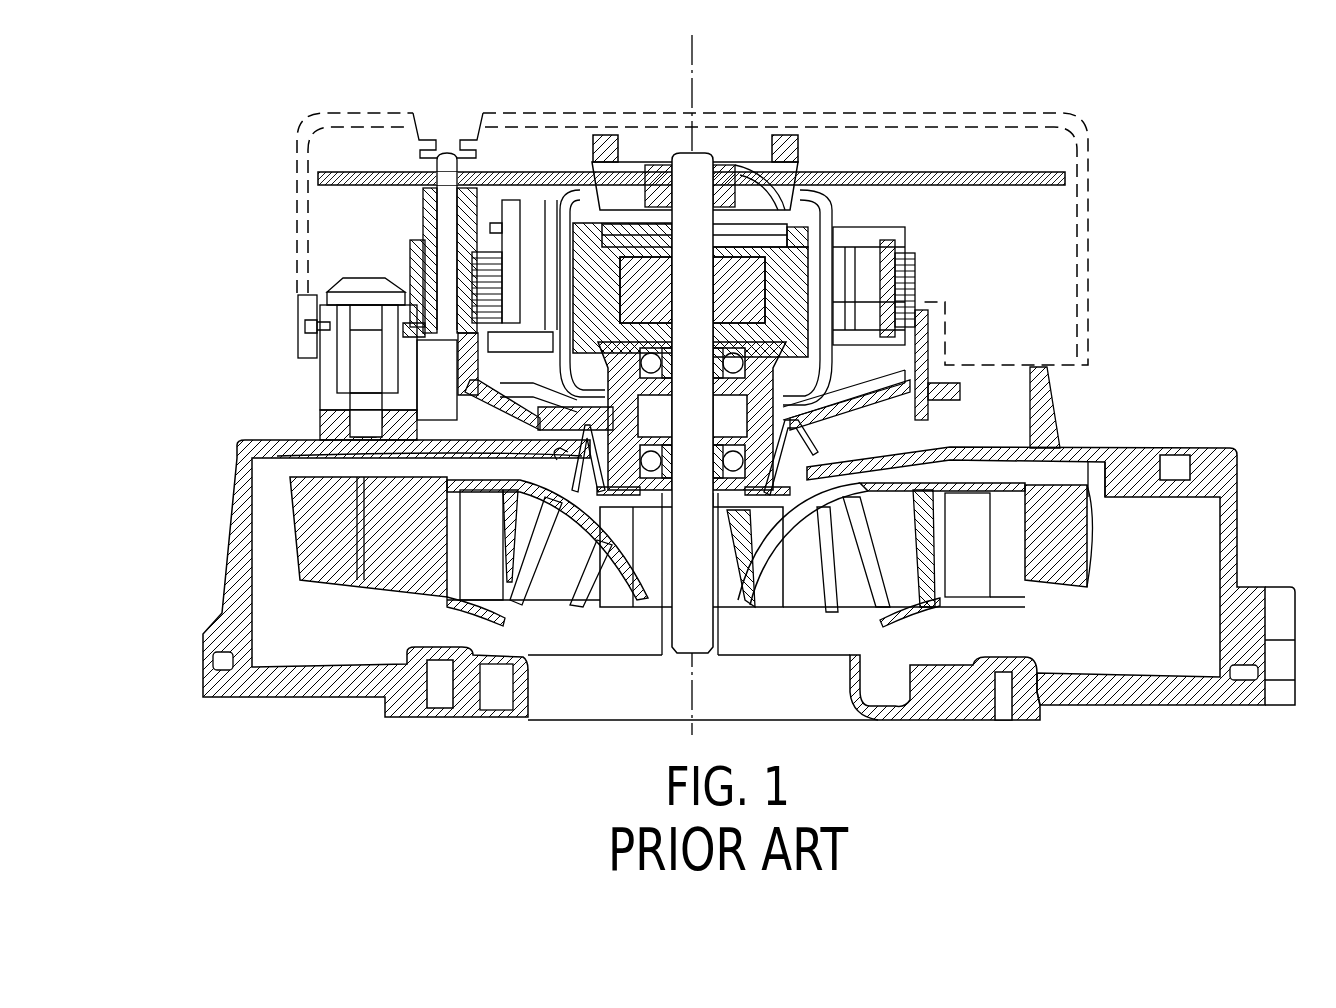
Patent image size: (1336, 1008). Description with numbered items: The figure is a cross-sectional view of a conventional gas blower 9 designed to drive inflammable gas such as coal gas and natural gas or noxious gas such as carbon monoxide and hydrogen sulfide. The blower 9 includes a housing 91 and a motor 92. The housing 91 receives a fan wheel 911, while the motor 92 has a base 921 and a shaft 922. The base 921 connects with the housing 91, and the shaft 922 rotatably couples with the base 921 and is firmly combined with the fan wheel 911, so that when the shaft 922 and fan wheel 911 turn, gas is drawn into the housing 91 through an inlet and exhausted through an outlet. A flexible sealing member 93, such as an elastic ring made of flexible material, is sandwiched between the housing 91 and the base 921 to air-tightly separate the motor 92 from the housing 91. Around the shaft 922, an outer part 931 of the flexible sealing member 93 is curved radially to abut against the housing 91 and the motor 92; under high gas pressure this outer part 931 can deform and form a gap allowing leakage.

The gas blower 9 is at (235, 147).
The housing 91 is at (1218, 463).
The fan wheel 911 is at (1072, 497).
The motor 92 is at (1218, 222).
The base 921 is at (945, 330).
The shaft 922 is at (705, 415).
The flexible sealing member 93 is at (567, 440).
The outer part 931 is at (573, 446).